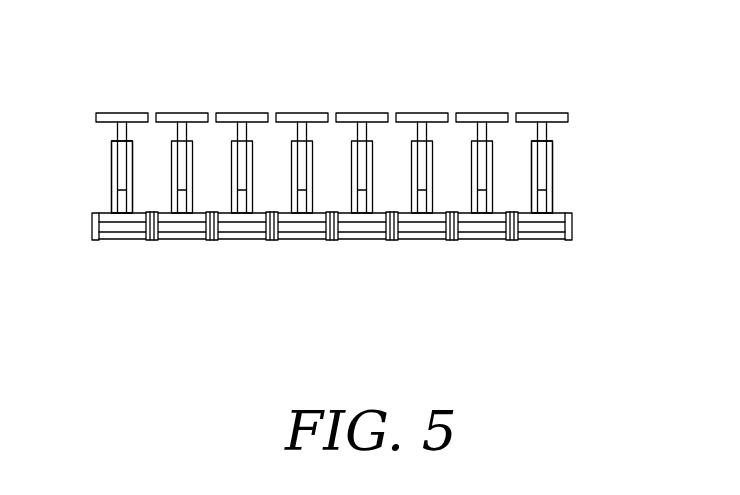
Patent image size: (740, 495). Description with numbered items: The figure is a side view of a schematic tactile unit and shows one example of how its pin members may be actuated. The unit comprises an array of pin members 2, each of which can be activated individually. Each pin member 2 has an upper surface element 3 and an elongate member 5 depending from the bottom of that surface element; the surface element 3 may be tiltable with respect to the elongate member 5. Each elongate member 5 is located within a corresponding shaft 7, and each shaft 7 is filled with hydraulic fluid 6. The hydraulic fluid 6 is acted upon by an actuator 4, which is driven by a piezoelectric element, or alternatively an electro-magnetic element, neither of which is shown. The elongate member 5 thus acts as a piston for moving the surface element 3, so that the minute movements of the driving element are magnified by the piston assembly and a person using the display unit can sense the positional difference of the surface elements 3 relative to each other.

The pin member 2 is at (541, 130).
The upper surface element 3 is at (124, 113).
The actuator 4 is at (371, 239).
The elongate member 5 is at (119, 152).
The hydraulic fluid 6 is at (125, 220).
The shaft 7 is at (551, 177).